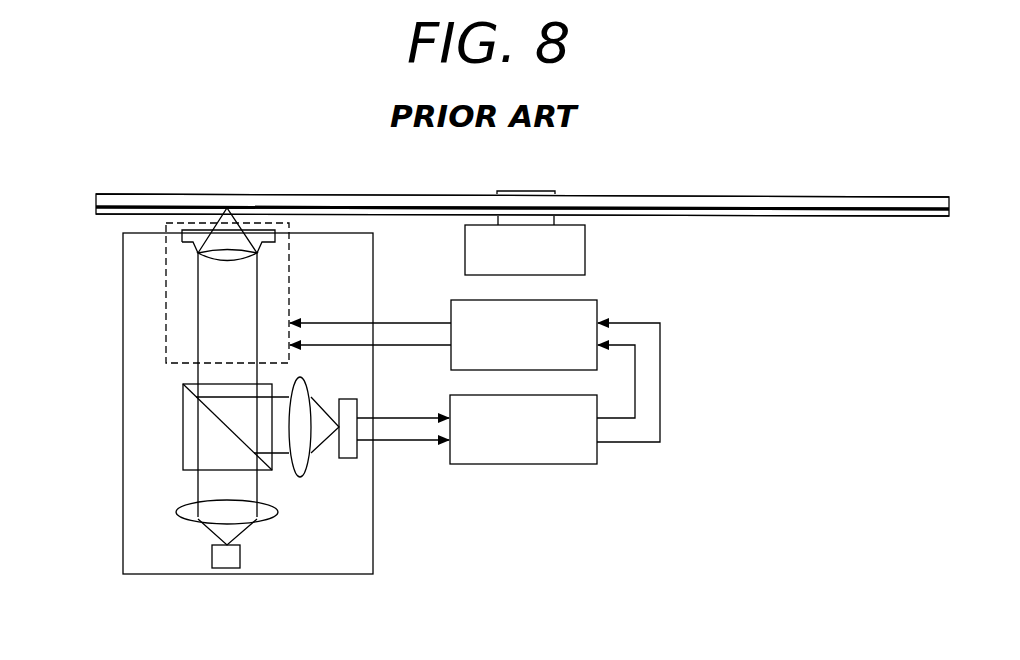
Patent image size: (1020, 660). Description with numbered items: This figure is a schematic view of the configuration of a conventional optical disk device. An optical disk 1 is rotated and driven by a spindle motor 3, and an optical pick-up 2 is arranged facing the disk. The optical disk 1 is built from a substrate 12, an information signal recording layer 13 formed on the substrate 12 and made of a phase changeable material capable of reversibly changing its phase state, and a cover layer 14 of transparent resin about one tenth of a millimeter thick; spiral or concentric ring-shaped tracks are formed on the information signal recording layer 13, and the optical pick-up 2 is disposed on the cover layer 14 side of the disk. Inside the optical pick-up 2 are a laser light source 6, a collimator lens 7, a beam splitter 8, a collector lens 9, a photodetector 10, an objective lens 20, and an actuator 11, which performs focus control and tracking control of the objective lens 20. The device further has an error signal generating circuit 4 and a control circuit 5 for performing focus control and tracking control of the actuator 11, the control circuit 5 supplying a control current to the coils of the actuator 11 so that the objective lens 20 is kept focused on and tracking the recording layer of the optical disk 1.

The optical disk 1 is at (854, 184).
The substrate 12 is at (755, 197).
The information signal recording layer 13 is at (814, 214).
The cover layer 14 is at (742, 214).
The optical pick-up 2 is at (157, 575).
The spindle motor 3 is at (573, 243).
The error signal generating circuit 4 is at (518, 453).
The control circuit 5 is at (585, 307).
The laser light source 6 is at (229, 563).
The collimator lens 7 is at (197, 517).
The beam splitter 8 is at (188, 448).
The collector lens 9 is at (300, 470).
The photodetector 10 is at (350, 456).
The actuator 11 is at (166, 326).
The objective lens 20 is at (213, 253).